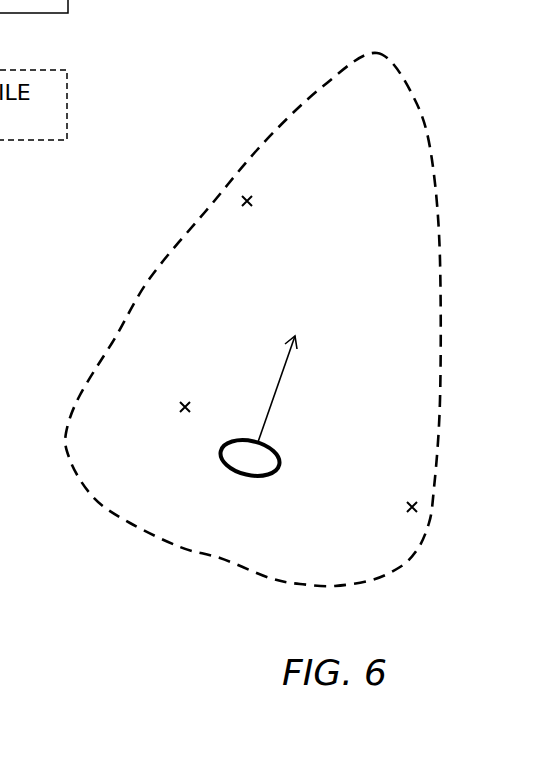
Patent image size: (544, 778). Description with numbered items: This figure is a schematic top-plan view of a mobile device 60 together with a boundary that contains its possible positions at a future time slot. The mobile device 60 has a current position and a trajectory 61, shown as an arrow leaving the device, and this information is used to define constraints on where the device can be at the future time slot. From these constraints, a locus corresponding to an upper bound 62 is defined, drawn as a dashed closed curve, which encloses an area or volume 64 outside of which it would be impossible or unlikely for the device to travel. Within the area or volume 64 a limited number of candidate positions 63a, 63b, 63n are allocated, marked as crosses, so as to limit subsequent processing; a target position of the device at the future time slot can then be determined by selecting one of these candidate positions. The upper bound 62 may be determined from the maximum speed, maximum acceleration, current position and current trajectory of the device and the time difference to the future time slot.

The mobile device 60 is at (280, 463).
The trajectory 61 is at (292, 338).
The upper bound 62 is at (436, 160).
The candidate position 63a is at (183, 405).
The candidate position 63b is at (243, 198).
The candidate position 63n is at (418, 507).
The area or volume 64 is at (355, 170).